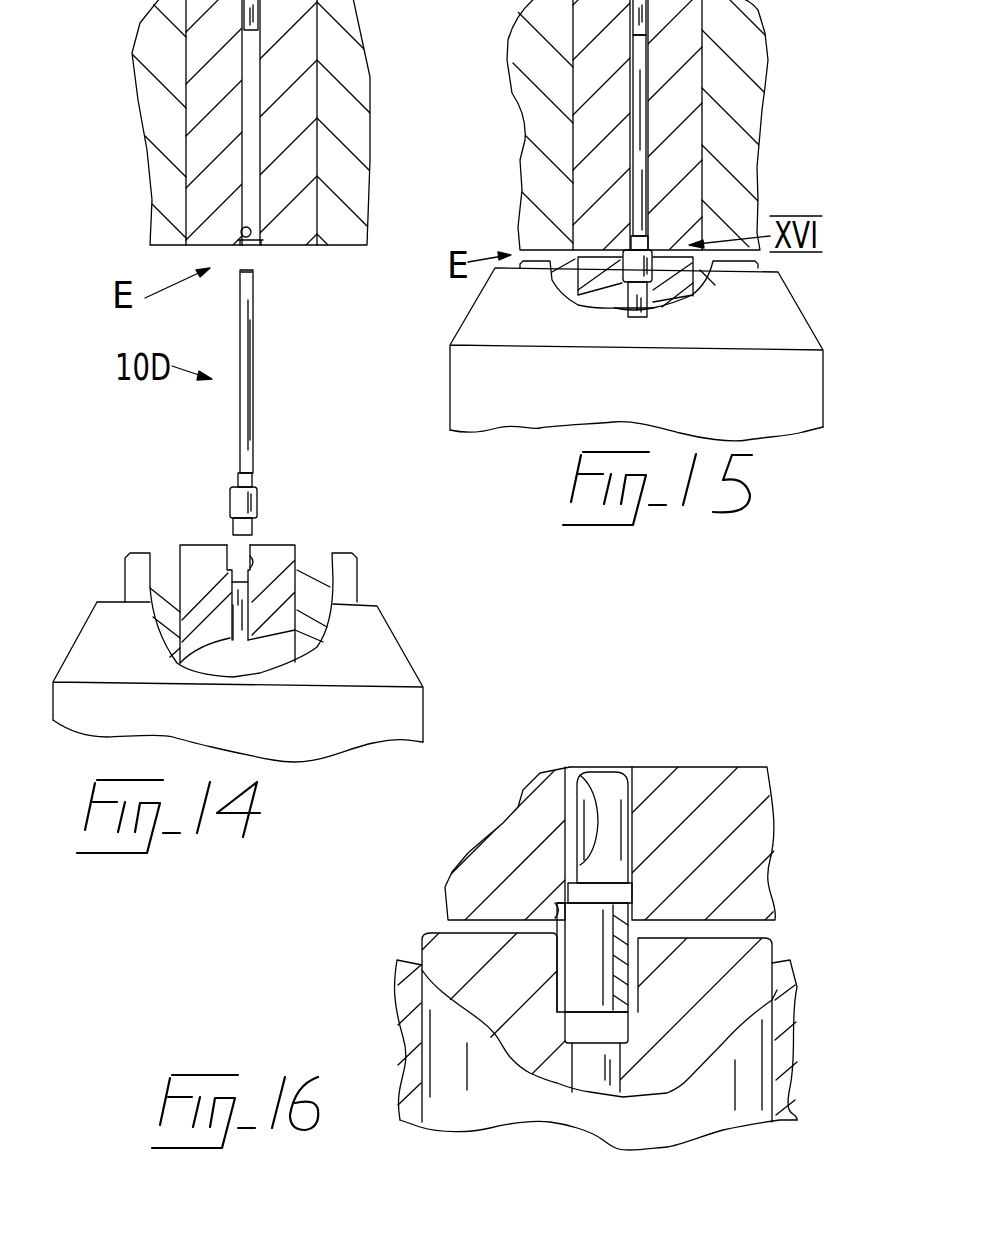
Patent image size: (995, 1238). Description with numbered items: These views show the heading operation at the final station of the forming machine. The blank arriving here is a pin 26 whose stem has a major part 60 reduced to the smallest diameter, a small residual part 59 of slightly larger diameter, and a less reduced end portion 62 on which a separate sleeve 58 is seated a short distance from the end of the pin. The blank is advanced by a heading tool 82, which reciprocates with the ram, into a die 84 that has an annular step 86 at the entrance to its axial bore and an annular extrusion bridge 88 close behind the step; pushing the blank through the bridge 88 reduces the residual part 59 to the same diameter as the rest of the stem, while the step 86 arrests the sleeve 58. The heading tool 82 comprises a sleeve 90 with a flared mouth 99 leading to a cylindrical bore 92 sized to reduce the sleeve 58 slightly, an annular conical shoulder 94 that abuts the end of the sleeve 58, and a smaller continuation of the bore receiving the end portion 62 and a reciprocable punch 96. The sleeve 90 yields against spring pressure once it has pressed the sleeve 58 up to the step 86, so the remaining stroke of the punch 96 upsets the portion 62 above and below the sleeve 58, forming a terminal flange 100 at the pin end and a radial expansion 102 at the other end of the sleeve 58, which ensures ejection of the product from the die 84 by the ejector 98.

In FIG. 14, the pin 26 is at (247, 386).
In FIG. 15, the pin 26 is at (640, 163).
In FIG. 16, the pin 26 is at (599, 787).
In FIG. 14, the sleeve 58 is at (252, 498).
In FIG. 15, the sleeve 58 is at (632, 268).
In FIG. 16, the sleeve 58 is at (593, 978).
In FIG. 14, the residual part 59 is at (254, 472).
In FIG. 14, the major part 60 is at (252, 320).
In FIG. 14, the less reduced portion 62 is at (238, 531).
In FIG. 14, the heading tool 82 is at (395, 571).
In FIG. 14, the die 84 is at (205, 93).
In FIG. 15, the die 84 is at (693, 128).
In FIG. 16, the die 84 is at (722, 797).
In FIG. 14, the annular step 86 is at (253, 247).
In FIG. 16, the annular step 86 is at (538, 905).
In FIG. 14, the annular extrusion bridge 88 is at (243, 229).
In FIG. 16, the annular extrusion bridge 88 is at (578, 793).
In FIG. 15, the sleeve 90 is at (612, 300).
In FIG. 16, the sleeve 90 is at (513, 1035).
In FIG. 14, the cylindrical bore 92 is at (268, 535).
In FIG. 14, the annular conical shoulder 94 is at (254, 548).
In FIG. 14, the punch 96 is at (230, 627).
In FIG. 15, the punch 96 is at (641, 290).
In FIG. 16, the punch 96 is at (598, 1073).
In FIG. 14, the ejector 98 is at (240, 16).
In FIG. 15, the ejector 98 is at (702, 12).
In FIG. 14, the flared mouth 99 is at (230, 533).
In FIG. 16, the flared mouth 99 is at (550, 917).
In FIG. 15, the terminal flange 100 is at (645, 292).
In FIG. 16, the terminal flange 100 is at (613, 1025).
In FIG. 15, the radial expansion 102 is at (627, 238).
In FIG. 16, the radial expansion 102 is at (626, 893).